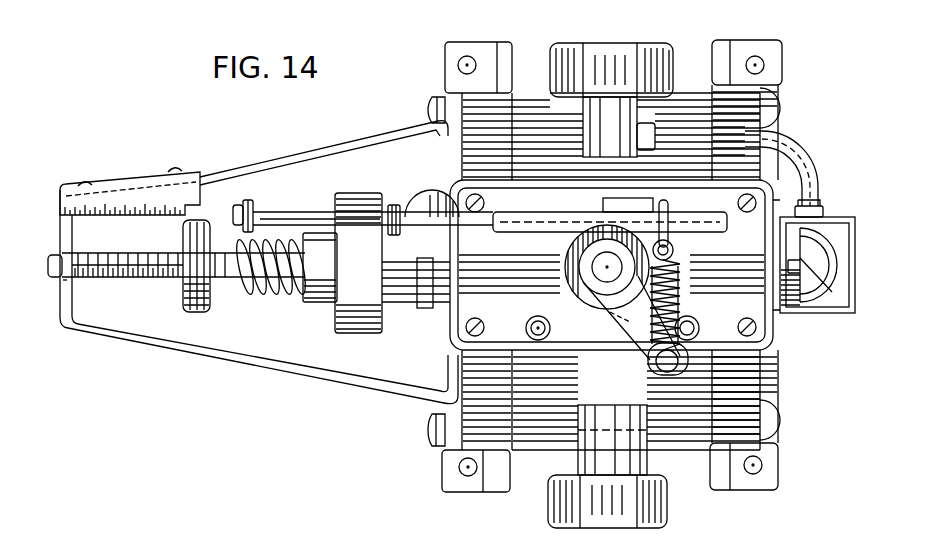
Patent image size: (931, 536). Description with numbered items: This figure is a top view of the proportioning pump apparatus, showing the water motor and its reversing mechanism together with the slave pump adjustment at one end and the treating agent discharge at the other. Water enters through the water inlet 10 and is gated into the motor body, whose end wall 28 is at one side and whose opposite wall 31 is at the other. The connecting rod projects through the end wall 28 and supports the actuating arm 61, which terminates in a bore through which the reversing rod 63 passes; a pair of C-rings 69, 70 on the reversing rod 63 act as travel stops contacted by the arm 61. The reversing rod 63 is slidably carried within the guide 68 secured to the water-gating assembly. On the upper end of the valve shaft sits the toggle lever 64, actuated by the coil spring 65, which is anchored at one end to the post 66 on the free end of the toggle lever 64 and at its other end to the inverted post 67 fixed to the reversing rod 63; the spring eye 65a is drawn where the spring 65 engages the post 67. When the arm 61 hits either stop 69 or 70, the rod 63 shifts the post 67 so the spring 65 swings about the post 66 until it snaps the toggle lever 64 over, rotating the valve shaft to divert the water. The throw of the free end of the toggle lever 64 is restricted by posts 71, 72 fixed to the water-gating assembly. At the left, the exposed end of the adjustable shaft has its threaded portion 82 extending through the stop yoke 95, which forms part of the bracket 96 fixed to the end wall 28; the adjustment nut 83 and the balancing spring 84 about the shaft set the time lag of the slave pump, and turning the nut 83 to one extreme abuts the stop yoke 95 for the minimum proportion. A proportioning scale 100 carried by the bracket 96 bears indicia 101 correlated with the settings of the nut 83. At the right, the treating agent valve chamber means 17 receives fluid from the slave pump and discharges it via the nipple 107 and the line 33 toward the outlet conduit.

The water inlet 10 is at (576, 450).
The treating agent valve chamber means 17 is at (821, 325).
The end wall 28 is at (460, 368).
The opposite wall 31 is at (742, 380).
The line 33 is at (802, 162).
The actuating arm 61 is at (347, 283).
The reversing rod 63 is at (315, 212).
The toggle lever 64 is at (620, 320).
The coil spring 65 is at (681, 290).
The spring eye 65a is at (675, 254).
The post 66 is at (667, 374).
The inverted post 67 is at (668, 212).
The guide 68 is at (514, 233).
The C-ring 69 is at (255, 208).
The C-ring 70 is at (395, 205).
The post 71 is at (538, 316).
The post 72 is at (699, 326).
The threaded portion 82 is at (122, 280).
The adjustment nut 83 is at (183, 291).
The balancing spring 84 is at (266, 292).
The stop yoke 95 is at (62, 286).
The bracket 96 is at (231, 170).
The proportioning scale 100 is at (140, 186).
The indicia 101 is at (90, 217).
The nipple 107 is at (824, 210).